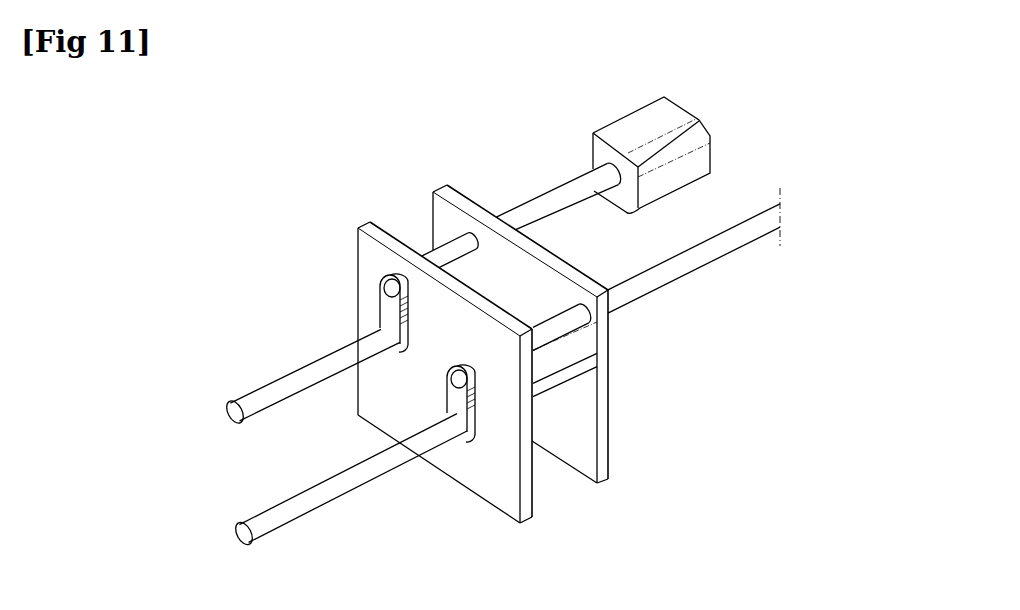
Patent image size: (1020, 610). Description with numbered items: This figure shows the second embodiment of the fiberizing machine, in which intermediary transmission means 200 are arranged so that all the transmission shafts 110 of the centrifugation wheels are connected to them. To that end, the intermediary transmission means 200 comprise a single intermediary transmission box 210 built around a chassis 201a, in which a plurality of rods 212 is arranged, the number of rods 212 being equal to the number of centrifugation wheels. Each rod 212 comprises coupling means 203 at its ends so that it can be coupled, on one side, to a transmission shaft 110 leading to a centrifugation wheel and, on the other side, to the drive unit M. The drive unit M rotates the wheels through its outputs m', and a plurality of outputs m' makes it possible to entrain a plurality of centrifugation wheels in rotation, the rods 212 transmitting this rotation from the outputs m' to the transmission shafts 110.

The intermediary transmission means 200 is at (655, 453).
The single intermediary transmission box 210 is at (388, 213).
The chassis 201a is at (447, 185).
The rod 212 is at (588, 325).
The coupling means 203 is at (360, 290).
The transmission shaft 110 is at (282, 388).
The drive unit M is at (698, 159).
The output m' is at (601, 213).